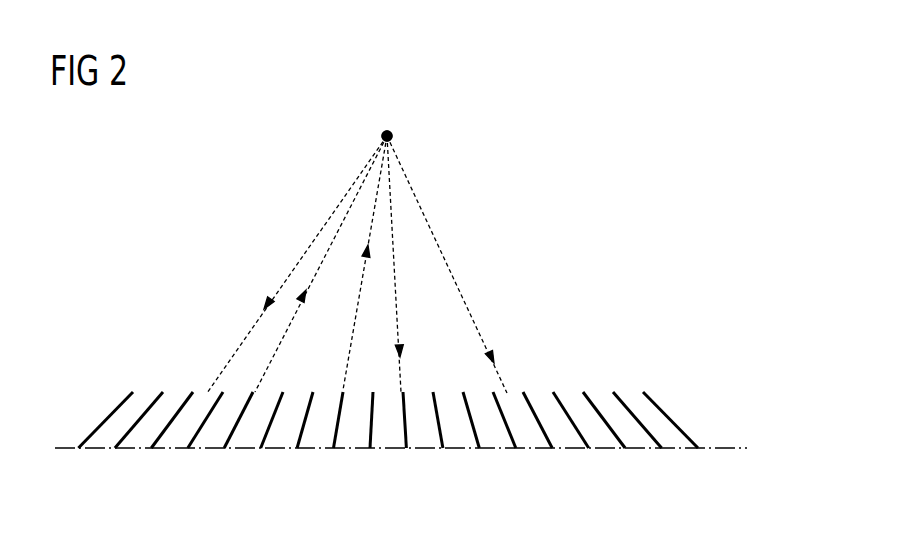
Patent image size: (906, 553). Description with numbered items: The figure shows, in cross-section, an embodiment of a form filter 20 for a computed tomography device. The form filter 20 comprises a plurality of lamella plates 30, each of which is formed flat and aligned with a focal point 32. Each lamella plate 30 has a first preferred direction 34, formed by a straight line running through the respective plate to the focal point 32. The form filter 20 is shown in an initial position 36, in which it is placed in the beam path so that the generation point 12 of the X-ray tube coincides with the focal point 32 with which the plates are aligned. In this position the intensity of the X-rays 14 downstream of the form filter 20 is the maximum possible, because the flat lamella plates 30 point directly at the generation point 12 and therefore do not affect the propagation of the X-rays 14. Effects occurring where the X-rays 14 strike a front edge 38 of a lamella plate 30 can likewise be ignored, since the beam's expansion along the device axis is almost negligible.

The generation point 12 is at (387, 131).
The focal point 32 is at (392, 103).
The X-rays 14 is at (288, 280).
The first preferred direction 34 is at (324, 258).
The form filter 20 is at (89, 390).
The lamella plates 30 is at (464, 410).
The initial position 36 is at (112, 449).
The front edge 38 is at (406, 393).